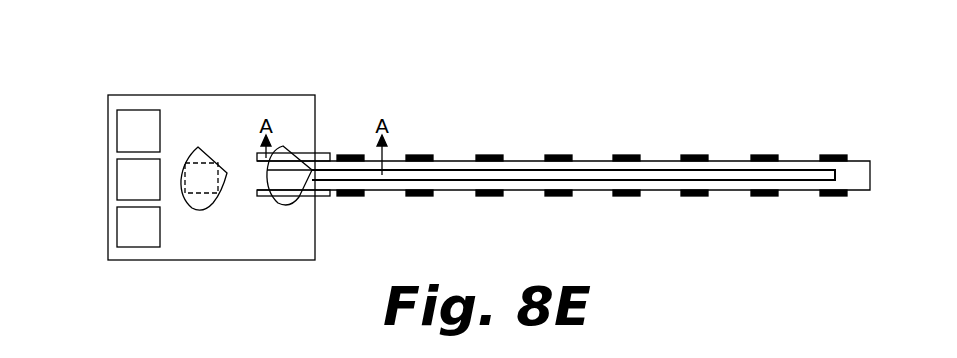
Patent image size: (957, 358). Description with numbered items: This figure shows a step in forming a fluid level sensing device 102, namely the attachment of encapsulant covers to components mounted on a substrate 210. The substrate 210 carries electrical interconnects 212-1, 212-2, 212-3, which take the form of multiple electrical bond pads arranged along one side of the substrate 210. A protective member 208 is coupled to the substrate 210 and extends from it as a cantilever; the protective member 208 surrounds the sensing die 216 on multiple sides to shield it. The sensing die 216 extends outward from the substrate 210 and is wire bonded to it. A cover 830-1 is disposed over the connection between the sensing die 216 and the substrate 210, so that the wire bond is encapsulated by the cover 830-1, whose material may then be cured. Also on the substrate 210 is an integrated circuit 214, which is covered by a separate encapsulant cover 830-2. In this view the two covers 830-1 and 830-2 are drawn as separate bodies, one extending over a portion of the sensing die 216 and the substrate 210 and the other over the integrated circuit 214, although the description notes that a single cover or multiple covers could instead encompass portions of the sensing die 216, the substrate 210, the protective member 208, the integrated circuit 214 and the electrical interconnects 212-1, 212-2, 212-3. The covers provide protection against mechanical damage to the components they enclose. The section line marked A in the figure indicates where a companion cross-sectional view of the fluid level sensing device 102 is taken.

The fluid level sensing device 102 is at (206, 82).
The substrate 210 is at (192, 252).
The electrical interconnect 212-1 is at (138, 228).
The electrical interconnect 212-2 is at (138, 180).
The electrical interconnect 212-3 is at (148, 130).
The integrated circuit 214 is at (202, 177).
The cover 830-1 is at (285, 158).
The encapsulant cover 830-2 is at (212, 124).
The sensing die 216 is at (518, 167).
The protective member 208 is at (377, 184).